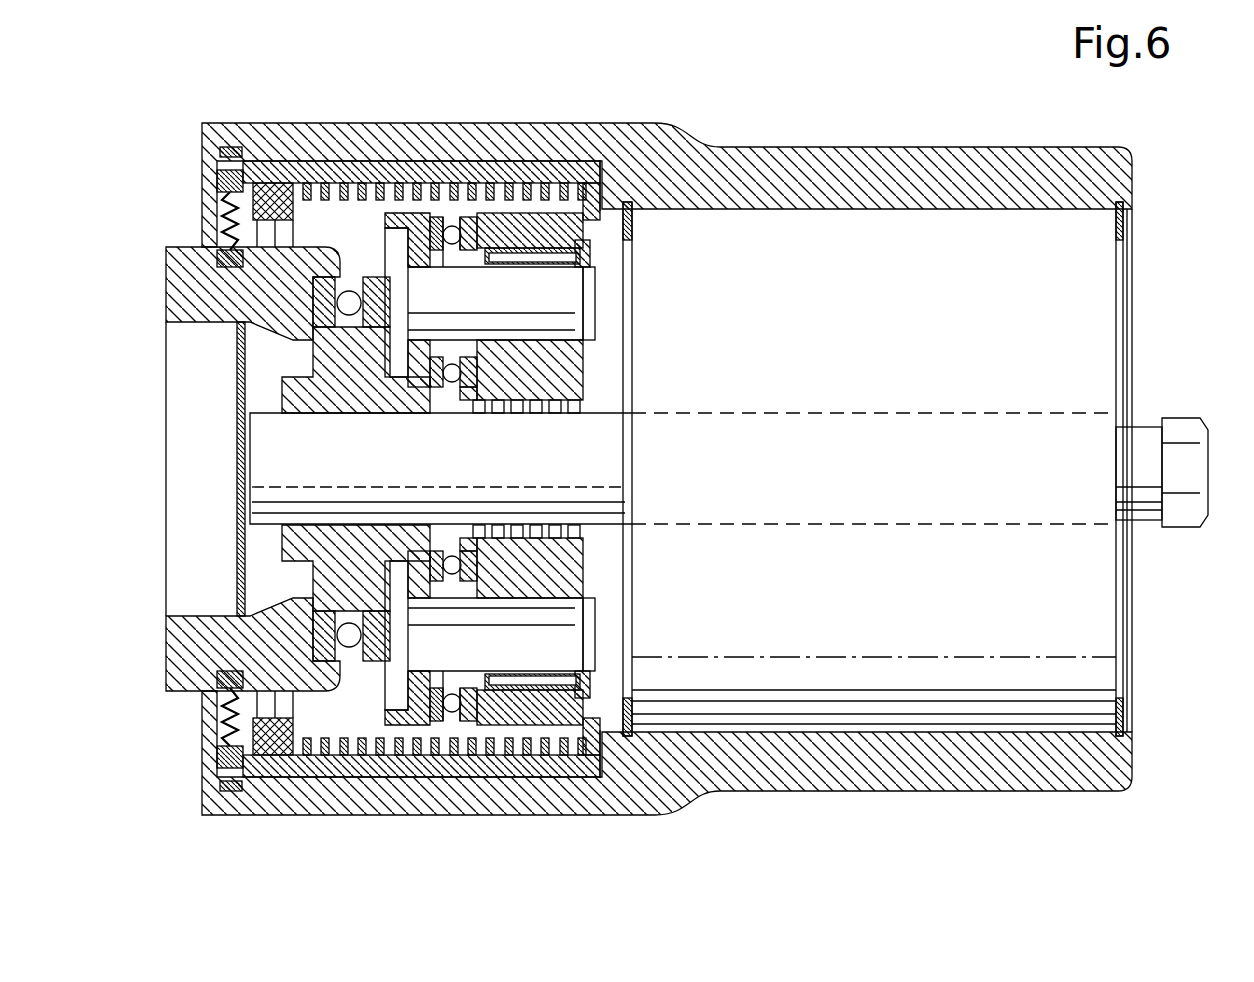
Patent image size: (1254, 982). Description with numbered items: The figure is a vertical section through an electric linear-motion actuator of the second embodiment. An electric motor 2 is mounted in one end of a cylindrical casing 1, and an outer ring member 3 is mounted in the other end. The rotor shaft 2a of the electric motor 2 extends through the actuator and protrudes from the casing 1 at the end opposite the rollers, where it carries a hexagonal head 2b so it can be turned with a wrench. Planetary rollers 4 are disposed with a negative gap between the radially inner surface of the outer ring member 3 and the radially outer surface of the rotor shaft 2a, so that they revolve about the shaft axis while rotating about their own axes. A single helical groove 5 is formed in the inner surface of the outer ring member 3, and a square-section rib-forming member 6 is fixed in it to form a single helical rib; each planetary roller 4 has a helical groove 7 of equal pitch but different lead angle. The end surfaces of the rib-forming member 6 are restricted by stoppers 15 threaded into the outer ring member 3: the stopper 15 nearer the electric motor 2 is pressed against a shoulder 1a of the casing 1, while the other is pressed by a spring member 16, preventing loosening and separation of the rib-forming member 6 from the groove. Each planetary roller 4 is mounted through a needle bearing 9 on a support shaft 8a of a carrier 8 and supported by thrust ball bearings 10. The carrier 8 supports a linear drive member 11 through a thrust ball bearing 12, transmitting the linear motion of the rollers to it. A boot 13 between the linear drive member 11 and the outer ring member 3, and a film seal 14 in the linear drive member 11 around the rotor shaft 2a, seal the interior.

The cylindrical casing 1 is at (850, 178).
The shoulder of the casing 1a is at (615, 187).
The electric motor 2 is at (905, 250).
The rotor shaft 2a is at (596, 445).
The hexagonal head 2b is at (1182, 432).
The outer ring member 3 is at (360, 175).
The planetary rollers 4 is at (540, 258).
The helical groove 5 is at (495, 290).
The rib-forming member 6 is at (473, 215).
The helical groove of planetary roller 7 is at (535, 530).
The carrier 8 is at (413, 217).
The support shafts 8a is at (453, 225).
The needle bearing 9 is at (590, 195).
The thrust ball bearings 10 is at (440, 217).
The linear drive member 11 is at (199, 294).
The thrust ball bearing 12 is at (348, 288).
The boot 13 is at (212, 720).
The film seal 14 is at (234, 555).
The stoppers 15 is at (280, 185).
The spring member 16 is at (238, 157).